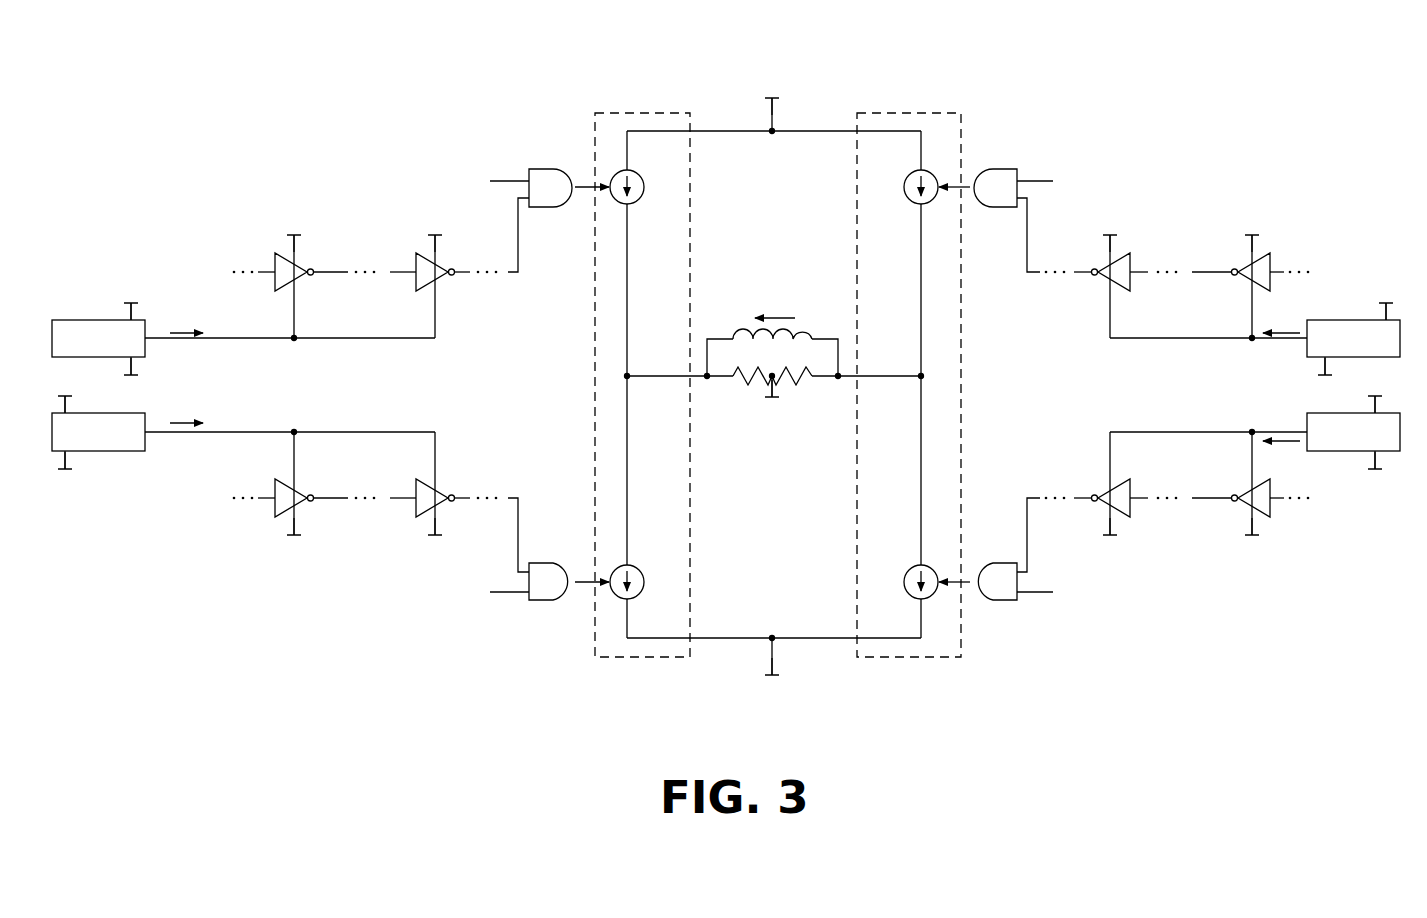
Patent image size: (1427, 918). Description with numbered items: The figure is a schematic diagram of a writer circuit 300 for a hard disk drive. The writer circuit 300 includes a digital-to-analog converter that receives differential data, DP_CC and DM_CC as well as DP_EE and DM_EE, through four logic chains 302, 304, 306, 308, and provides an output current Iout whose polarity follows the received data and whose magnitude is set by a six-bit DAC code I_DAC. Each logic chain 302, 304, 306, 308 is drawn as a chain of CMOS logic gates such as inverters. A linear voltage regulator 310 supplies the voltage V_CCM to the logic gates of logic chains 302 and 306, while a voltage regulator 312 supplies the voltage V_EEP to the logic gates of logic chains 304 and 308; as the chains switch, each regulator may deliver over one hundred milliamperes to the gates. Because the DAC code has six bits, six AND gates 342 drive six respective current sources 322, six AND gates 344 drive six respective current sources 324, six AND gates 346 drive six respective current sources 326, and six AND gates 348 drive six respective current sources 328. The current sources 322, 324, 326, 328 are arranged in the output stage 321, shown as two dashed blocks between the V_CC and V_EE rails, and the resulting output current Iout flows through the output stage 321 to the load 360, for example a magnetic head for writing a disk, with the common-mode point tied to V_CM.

The writer circuit 300 is at (117, 33).
The logic chain 302 is at (228, 239).
The logic chain 304 is at (228, 537).
The logic chain 306 is at (1316, 239).
The logic chain 308 is at (1316, 537).
The linear voltage regulator 310 is at (145, 353).
The voltage regulator 312 is at (120, 452).
The output stage 321 is at (626, 113).
The current sources 322 is at (634, 175).
The current sources 324 is at (634, 570).
The current sources 326 is at (916, 175).
The current sources 328 is at (916, 570).
The AND gates 342 is at (541, 170).
The AND gates 344 is at (548, 601).
The AND gates 346 is at (1014, 170).
The AND gates 348 is at (1005, 601).
The load 360 is at (797, 339).